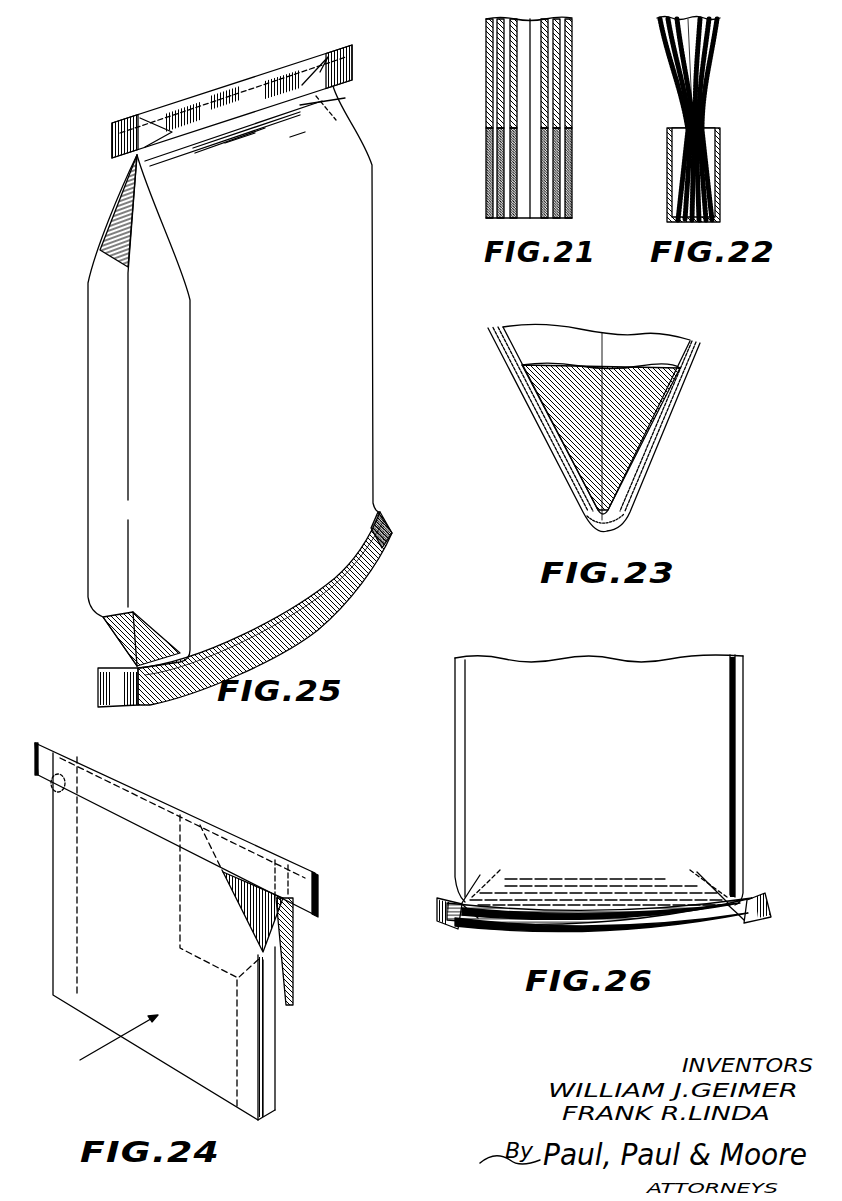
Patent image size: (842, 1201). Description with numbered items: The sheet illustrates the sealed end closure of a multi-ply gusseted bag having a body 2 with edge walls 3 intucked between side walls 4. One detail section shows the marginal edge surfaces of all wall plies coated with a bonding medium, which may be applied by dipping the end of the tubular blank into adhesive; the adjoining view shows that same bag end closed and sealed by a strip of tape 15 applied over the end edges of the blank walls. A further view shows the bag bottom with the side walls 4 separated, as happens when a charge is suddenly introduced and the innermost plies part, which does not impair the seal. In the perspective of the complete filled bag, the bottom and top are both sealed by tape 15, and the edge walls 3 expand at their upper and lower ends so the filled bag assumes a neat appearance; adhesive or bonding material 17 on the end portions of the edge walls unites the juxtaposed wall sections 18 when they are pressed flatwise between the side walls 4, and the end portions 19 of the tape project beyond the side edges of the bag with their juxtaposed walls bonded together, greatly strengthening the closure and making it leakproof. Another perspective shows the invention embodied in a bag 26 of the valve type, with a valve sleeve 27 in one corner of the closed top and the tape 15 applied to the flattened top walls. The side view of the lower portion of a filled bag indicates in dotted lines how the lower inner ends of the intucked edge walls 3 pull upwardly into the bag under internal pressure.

In FIG. 23, the body 2 is at (492, 337).
In FIG. 25, the body 2 is at (345, 454).
In FIG. 24, the body 2 is at (172, 1058).
In FIG. 26, the body 2 is at (627, 677).
In FIG. 25, the edge walls 3 is at (106, 433).
In FIG. 26, the edge walls 3 is at (458, 731).
In FIG. 21, the side walls 4 is at (484, 103).
In FIG. 22, the side walls 4 is at (659, 88).
In FIG. 23, the side walls 4 is at (519, 401).
In FIG. 25, the side walls 4 is at (345, 98).
In FIG. 22, the strip of tape 15 is at (722, 192).
In FIG. 23, the strip of tape 15 is at (650, 492).
In FIG. 25, the strip of tape 15 is at (226, 94).
In FIG. 24, the strip of tape 15 is at (245, 858).
In FIG. 26, the strip of tape 15 is at (660, 932).
In FIG. 24, the adhesive or bonding material 17 is at (53, 791).
In FIG. 25, the wall sections 18 is at (157, 180).
In FIG. 26, the wall sections 18 is at (484, 930).
In FIG. 25, the end portions 19 is at (112, 146).
In FIG. 24, the end portions 19 is at (38, 744).
In FIG. 26, the end portions 19 is at (437, 912).
In FIG. 24, the bag 26 is at (104, 1048).
In FIG. 24, the valve sleeve 27 is at (290, 960).